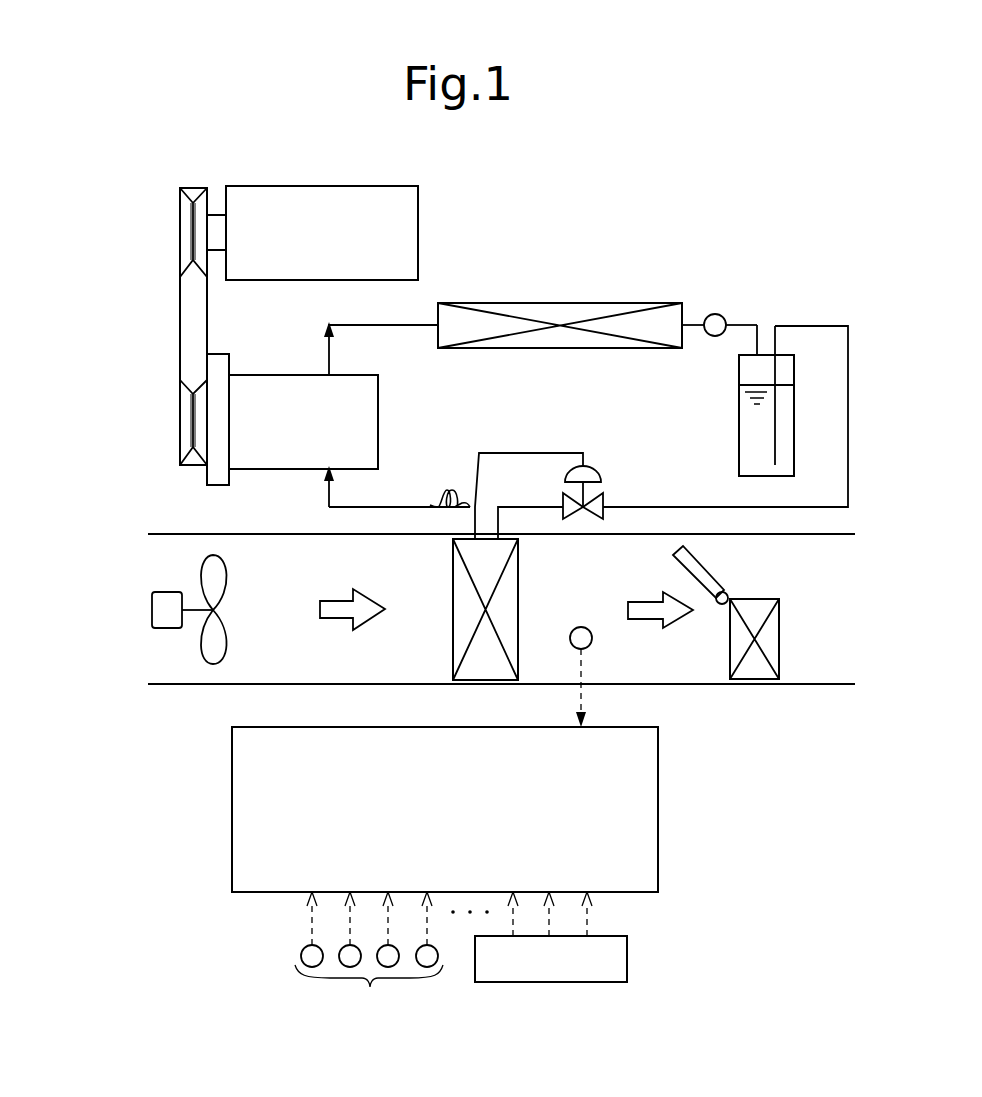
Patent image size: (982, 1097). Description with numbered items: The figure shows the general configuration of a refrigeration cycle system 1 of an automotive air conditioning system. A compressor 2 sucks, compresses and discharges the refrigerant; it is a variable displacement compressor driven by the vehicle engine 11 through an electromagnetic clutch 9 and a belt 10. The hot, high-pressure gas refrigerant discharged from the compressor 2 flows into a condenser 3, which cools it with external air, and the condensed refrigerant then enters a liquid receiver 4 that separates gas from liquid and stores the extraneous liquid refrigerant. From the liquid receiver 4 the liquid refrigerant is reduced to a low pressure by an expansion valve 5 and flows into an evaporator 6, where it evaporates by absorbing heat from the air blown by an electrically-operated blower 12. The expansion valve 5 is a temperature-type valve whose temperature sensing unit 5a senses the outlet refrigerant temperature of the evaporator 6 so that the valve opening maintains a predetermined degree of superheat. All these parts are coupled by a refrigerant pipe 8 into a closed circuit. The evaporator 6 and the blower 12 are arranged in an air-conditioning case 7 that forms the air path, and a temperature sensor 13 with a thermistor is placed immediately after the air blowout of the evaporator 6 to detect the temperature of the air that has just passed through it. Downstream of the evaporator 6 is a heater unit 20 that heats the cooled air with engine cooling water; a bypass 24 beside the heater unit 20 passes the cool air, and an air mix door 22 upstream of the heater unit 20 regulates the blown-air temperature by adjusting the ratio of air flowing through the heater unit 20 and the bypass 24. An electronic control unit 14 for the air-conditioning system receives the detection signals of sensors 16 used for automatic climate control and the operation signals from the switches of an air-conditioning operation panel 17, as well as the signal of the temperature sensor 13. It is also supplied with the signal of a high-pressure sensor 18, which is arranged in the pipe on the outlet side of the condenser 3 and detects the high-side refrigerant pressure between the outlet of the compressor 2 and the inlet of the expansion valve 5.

The refrigeration cycle system 1 is at (789, 317).
The compressor 2 is at (370, 389).
The condenser 3 is at (560, 309).
The liquid receiver 4 is at (741, 429).
The expansion valve 5 is at (605, 500).
The temperature sensing unit 5a is at (444, 490).
The evaporator 6 is at (456, 586).
The air-conditioning case 7 is at (163, 687).
The refrigerant pipe 8 is at (382, 325).
The electromagnetic clutch 9 is at (208, 477).
The belt 10 is at (184, 315).
The vehicle engine 11 is at (412, 200).
The blower 12 is at (208, 568).
The temperature sensor 13 is at (580, 627).
The electronic control unit 14 is at (232, 862).
The sensors 16 is at (369, 960).
The air-conditioning operation panel 17 is at (629, 960).
The high-pressure sensor 18 is at (716, 314).
The heater unit 20 is at (776, 641).
The air mix door 22 is at (695, 562).
The bypass 24 is at (758, 582).